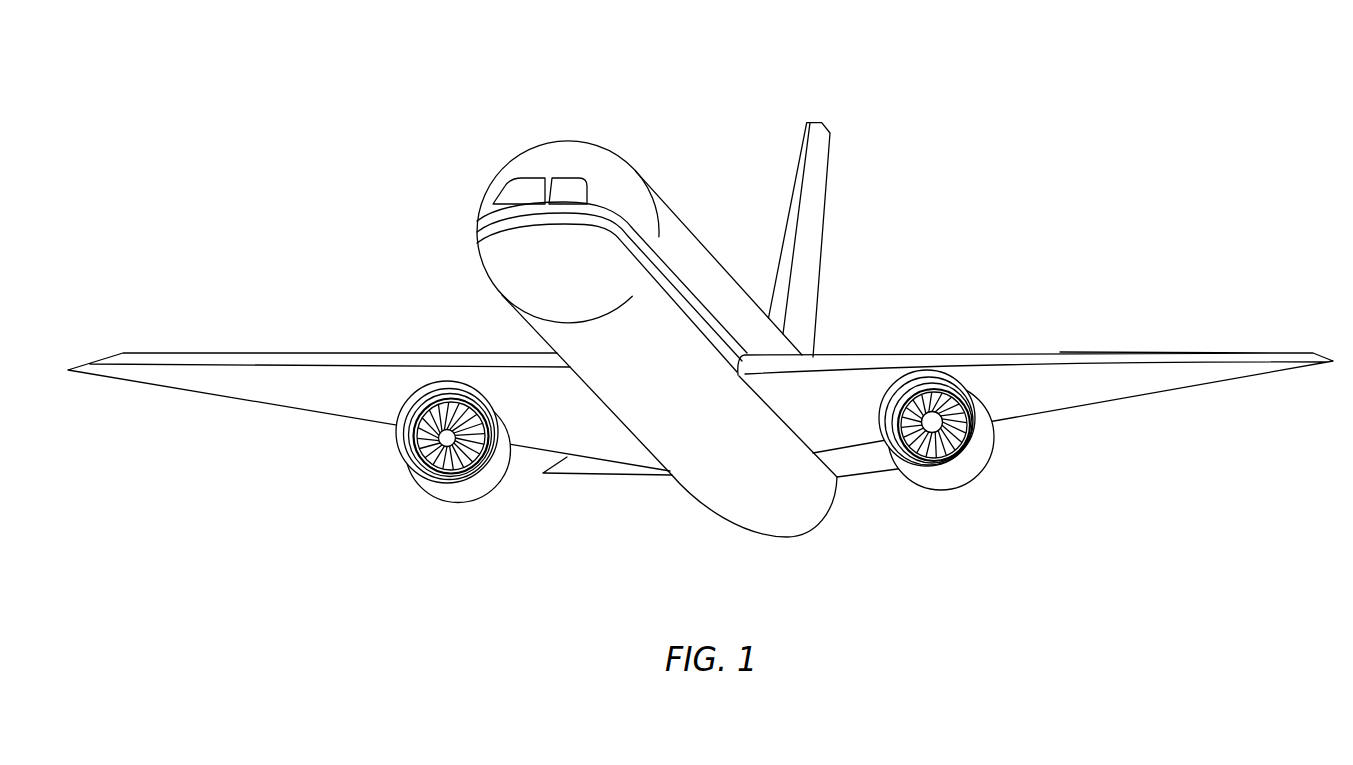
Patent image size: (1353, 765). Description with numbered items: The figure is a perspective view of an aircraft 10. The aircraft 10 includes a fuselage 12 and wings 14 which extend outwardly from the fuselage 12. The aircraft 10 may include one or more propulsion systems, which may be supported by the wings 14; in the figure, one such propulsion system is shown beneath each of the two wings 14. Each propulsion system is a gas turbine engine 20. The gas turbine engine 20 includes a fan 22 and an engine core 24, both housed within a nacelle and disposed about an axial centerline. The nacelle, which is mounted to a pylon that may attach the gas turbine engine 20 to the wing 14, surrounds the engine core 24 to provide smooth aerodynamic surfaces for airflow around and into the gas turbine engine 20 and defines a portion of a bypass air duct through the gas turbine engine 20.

The aircraft 10 is at (700, 320).
The fuselage 12 is at (702, 278).
The wings 14 is at (363, 396).
The gas turbine engine 20 is at (707, 469).
The fan 22 is at (422, 478).
The engine core 24 is at (460, 478).